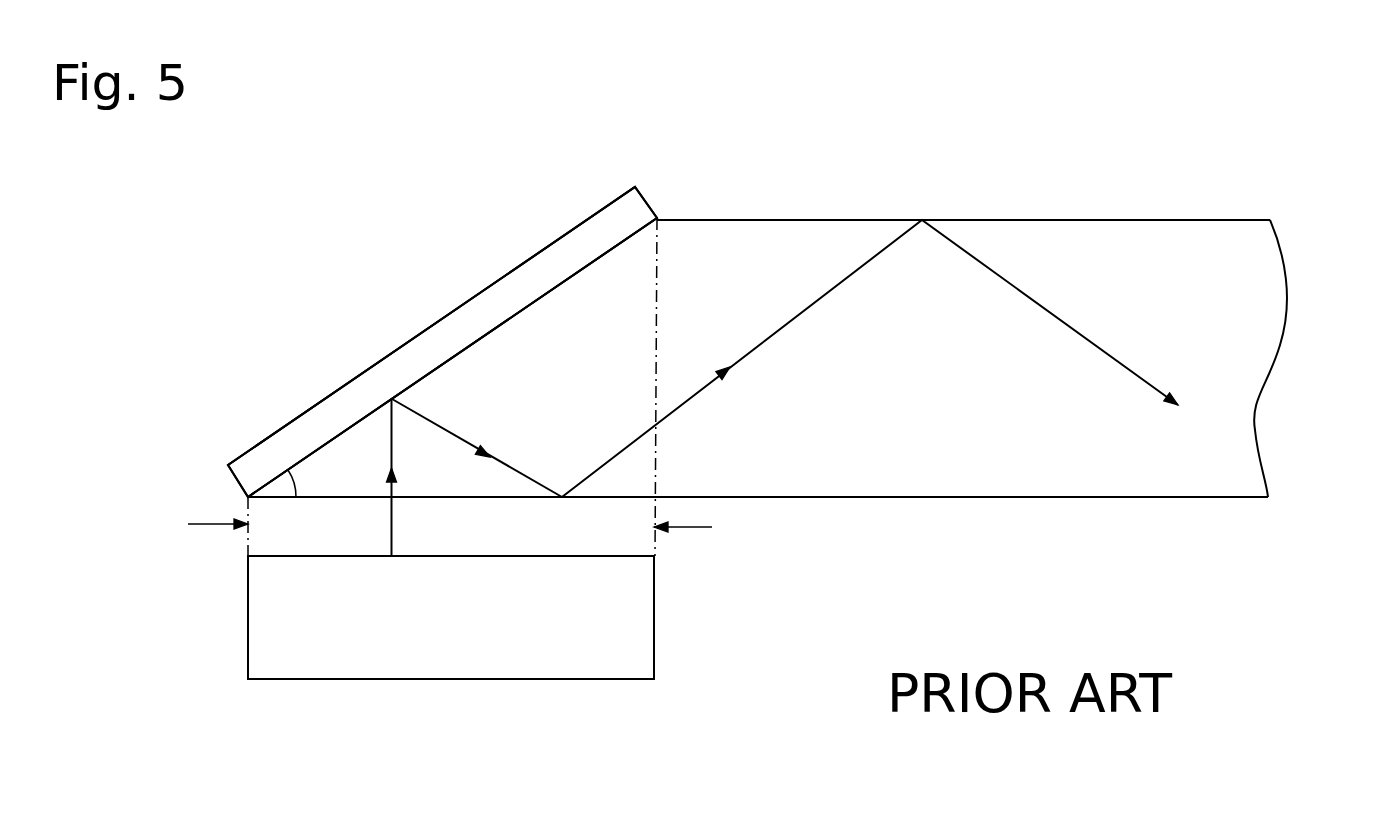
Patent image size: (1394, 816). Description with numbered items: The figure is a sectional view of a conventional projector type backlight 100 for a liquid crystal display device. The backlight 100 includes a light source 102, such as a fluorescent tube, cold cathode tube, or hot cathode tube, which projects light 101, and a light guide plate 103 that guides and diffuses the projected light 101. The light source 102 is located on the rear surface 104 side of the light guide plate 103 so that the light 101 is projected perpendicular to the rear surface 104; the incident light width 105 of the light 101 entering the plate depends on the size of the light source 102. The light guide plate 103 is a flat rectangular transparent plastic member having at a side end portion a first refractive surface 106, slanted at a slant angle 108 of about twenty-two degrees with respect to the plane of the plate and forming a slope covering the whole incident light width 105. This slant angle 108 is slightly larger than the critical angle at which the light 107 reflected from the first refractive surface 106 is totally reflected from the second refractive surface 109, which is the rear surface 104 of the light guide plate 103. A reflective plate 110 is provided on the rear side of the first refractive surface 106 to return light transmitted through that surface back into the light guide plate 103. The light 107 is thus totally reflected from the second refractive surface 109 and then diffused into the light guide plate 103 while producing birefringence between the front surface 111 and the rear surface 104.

The backlight 100 is at (445, 290).
The light 101 is at (392, 528).
The light source 102 is at (572, 672).
The light guide plate 103 is at (1275, 263).
The rear surface 104 is at (1046, 498).
The incident light width 105 is at (221, 525).
The first refractive surface 106 is at (498, 327).
The reflected light 107 is at (457, 435).
The slant angle 108 is at (298, 497).
The second refractive surface 109 is at (617, 497).
The reflective plate 110 is at (573, 229).
The front surface 111 is at (1097, 218).